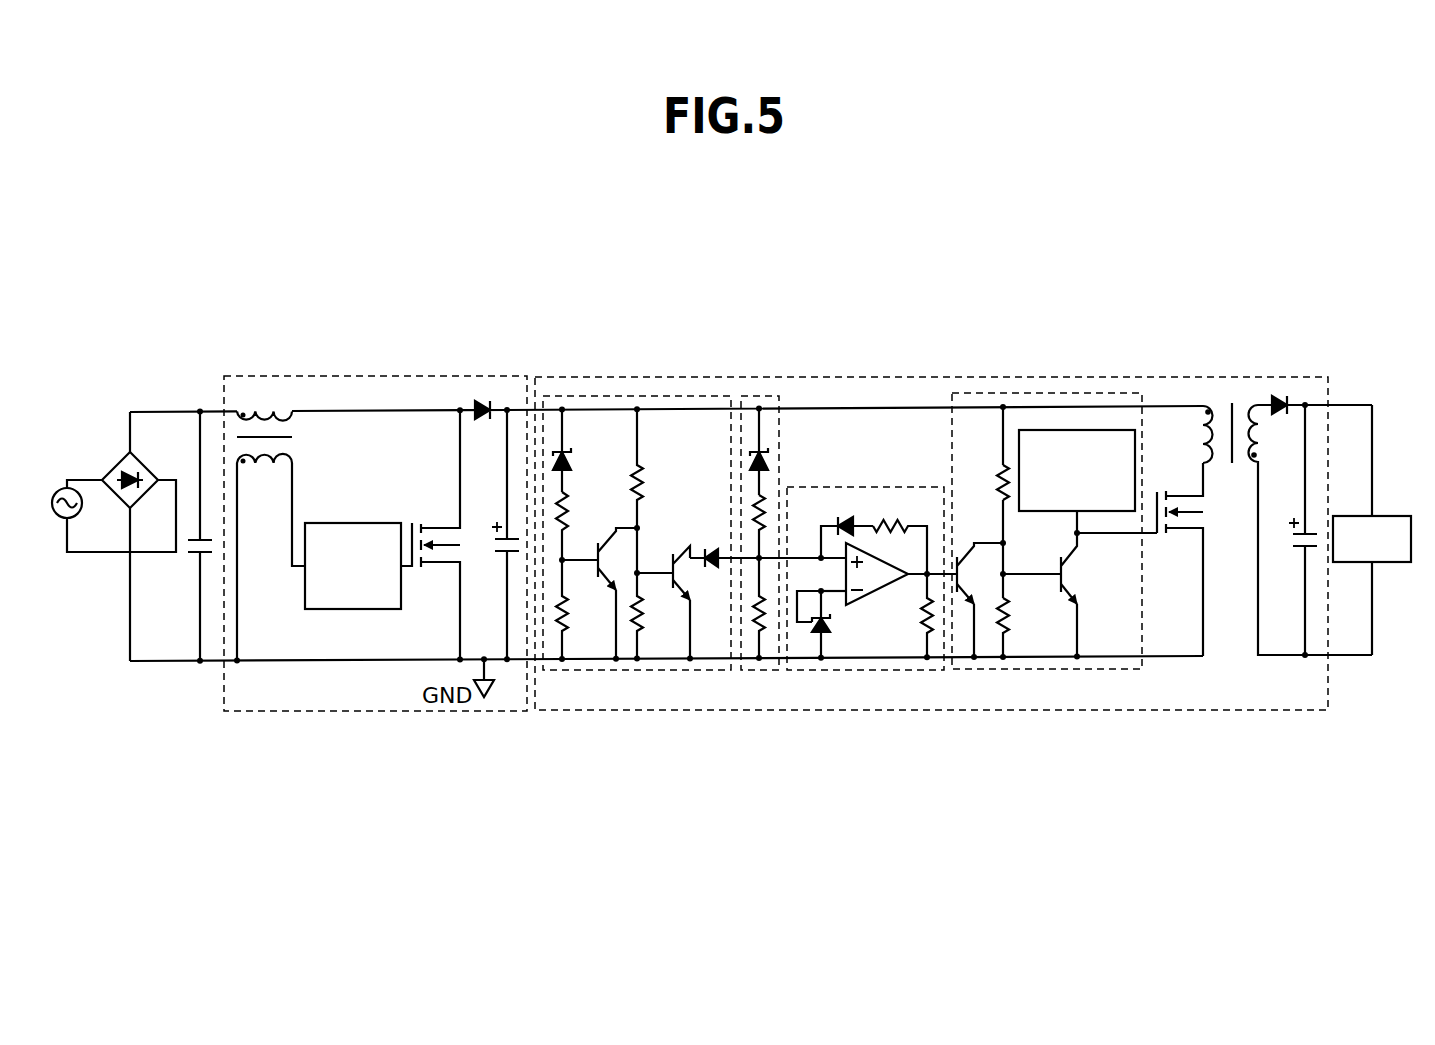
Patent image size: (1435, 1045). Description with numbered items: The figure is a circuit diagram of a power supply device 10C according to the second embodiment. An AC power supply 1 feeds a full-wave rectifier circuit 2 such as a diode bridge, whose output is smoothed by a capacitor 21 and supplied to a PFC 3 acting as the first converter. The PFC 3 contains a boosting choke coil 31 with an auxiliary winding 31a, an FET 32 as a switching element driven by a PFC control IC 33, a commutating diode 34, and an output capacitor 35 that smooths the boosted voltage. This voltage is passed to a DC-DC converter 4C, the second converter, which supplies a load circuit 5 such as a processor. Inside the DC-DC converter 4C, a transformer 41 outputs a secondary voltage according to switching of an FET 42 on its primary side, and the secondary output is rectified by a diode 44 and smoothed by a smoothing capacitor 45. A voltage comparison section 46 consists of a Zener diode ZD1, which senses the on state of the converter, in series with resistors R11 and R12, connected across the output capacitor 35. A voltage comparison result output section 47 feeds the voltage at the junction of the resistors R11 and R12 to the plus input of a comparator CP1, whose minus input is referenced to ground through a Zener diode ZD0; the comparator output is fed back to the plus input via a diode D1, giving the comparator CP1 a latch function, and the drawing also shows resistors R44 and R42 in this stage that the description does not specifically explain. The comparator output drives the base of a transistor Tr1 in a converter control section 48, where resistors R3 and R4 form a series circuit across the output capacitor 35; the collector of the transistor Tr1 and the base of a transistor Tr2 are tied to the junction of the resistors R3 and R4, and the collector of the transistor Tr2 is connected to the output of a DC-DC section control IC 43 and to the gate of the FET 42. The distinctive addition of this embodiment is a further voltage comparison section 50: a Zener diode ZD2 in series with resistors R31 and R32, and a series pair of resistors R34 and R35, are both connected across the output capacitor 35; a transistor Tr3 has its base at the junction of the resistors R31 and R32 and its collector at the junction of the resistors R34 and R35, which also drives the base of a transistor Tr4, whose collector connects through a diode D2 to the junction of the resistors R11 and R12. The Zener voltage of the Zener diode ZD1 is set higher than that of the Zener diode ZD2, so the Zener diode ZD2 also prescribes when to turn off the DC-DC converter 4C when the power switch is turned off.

The AC power supply 1 is at (62, 488).
The full-wave rectifier circuit 2 is at (150, 466).
The capacitor 21 is at (193, 557).
The PFC 3 is at (365, 712).
The boosting choke coil 31 is at (295, 417).
The auxiliary winding 31a is at (295, 453).
The FET 32 is at (418, 520).
The PFC control IC 33 is at (378, 522).
The commutating diode 34 is at (483, 400).
The output capacitor 35 is at (497, 553).
The DC-DC converter 4C is at (1153, 710).
The voltage comparison section 50 is at (626, 395).
The voltage comparison section 46 is at (760, 395).
The voltage comparison result output section 47 is at (908, 487).
The converter control section 48 is at (984, 393).
The DC-DC section control IC 43 is at (1055, 428).
The FET 42 is at (1160, 536).
The transformer 41 is at (1232, 470).
The diode 44 is at (1283, 397).
The smoothing capacitor 45 is at (1292, 540).
The load circuit 5 is at (1385, 516).
The power supply device 10C is at (889, 314).
The Zener diode ZD2 is at (589, 451).
The resistor R31 is at (588, 526).
The resistor R32 is at (588, 609).
The transistor Tr3 is at (599, 593).
The resistor R34 is at (663, 491).
The resistor R35 is at (663, 616).
The transistor Tr4 is at (663, 594).
The diode D2 is at (724, 575).
The Zener diode ZD1 is at (770, 457).
The resistor R11 is at (768, 494).
The resistor R12 is at (766, 625).
The comparator CP1 is at (877, 591).
The diode D1 is at (840, 526).
The resistor R44 is at (900, 534).
The resistor R42 is at (905, 615).
The Zener diode ZD0 is at (840, 624).
The transistor Tr1 is at (980, 586).
The resistor R3 is at (984, 482).
The resistor R4 is at (1022, 615).
The transistor Tr2 is at (1040, 584).